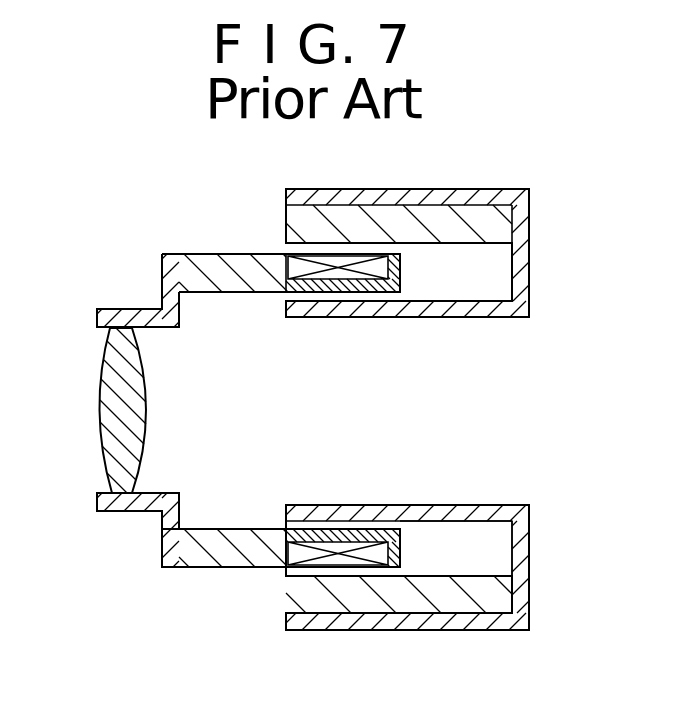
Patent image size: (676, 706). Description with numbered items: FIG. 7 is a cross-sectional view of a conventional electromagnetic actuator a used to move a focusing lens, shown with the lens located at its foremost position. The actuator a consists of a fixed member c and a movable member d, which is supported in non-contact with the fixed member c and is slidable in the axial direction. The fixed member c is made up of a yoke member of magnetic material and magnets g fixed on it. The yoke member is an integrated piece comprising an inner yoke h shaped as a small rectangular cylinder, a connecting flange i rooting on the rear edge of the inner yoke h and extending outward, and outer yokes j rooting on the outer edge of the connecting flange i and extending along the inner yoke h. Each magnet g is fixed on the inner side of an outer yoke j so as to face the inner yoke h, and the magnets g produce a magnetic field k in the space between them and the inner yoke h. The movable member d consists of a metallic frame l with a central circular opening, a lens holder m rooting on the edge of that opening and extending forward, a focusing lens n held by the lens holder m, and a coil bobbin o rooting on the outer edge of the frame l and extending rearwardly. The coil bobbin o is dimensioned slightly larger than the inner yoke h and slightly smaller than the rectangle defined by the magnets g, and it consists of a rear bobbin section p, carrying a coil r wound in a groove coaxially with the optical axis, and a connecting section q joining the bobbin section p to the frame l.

The electromagnetic actuator a is at (338, 181).
The fixed member c is at (417, 189).
The outer yoke j is at (462, 196).
The magnet g is at (487, 227).
The connecting flange i is at (524, 256).
The inner yoke h is at (438, 317).
The magnetic field k is at (464, 282).
The coil bobbin o is at (252, 201).
The connecting section q is at (193, 254).
The rear bobbin section p is at (322, 276).
The movable member d is at (140, 311).
The focusing lens n is at (110, 400).
The lens holder m is at (113, 511).
The metallic frame l is at (160, 543).
The coil r is at (342, 563).